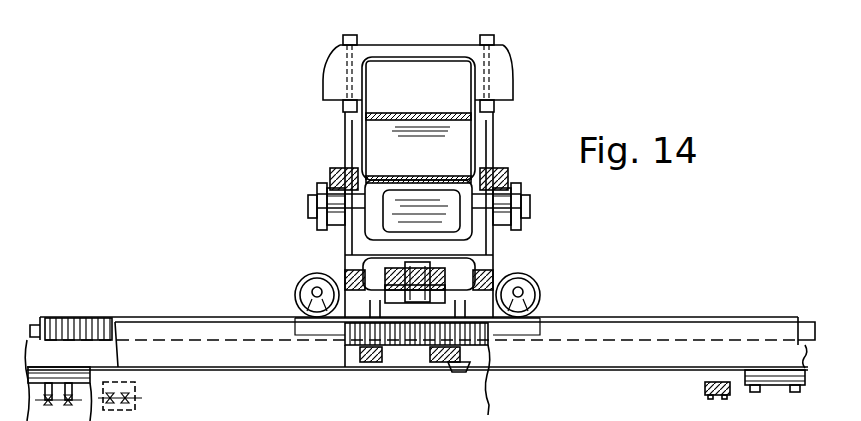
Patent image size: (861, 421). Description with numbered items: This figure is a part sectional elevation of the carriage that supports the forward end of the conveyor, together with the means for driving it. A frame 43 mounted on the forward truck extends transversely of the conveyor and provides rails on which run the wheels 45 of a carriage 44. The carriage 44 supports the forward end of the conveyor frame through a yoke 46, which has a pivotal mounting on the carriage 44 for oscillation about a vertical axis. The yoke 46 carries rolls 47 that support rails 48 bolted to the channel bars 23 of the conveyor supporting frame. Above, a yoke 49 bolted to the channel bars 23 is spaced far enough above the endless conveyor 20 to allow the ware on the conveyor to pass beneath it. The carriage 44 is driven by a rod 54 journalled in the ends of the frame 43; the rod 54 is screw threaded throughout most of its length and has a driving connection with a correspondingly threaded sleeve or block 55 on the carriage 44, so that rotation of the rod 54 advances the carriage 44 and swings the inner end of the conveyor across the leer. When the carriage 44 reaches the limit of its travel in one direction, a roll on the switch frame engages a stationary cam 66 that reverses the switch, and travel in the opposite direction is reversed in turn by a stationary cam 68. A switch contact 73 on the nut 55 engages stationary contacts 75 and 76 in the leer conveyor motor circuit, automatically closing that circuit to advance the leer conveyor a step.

The yoke 49 is at (447, 31).
The endless conveyor 20 is at (433, 101).
The channel bars 23 is at (358, 156).
The rails 48 is at (328, 181).
The rolls 47 is at (325, 226).
The yoke 46 is at (368, 249).
The carriage 44 is at (488, 276).
The wheels 45 is at (522, 289).
The frame 43 is at (668, 311).
The rod 54 is at (400, 346).
The threaded sleeve or block 55 is at (445, 353).
The switch contact 73 is at (456, 373).
The stationary cam 66 is at (88, 364).
The stationary contact 75 is at (120, 382).
The stationary cam 68 is at (768, 369).
The stationary contact 76 is at (705, 385).